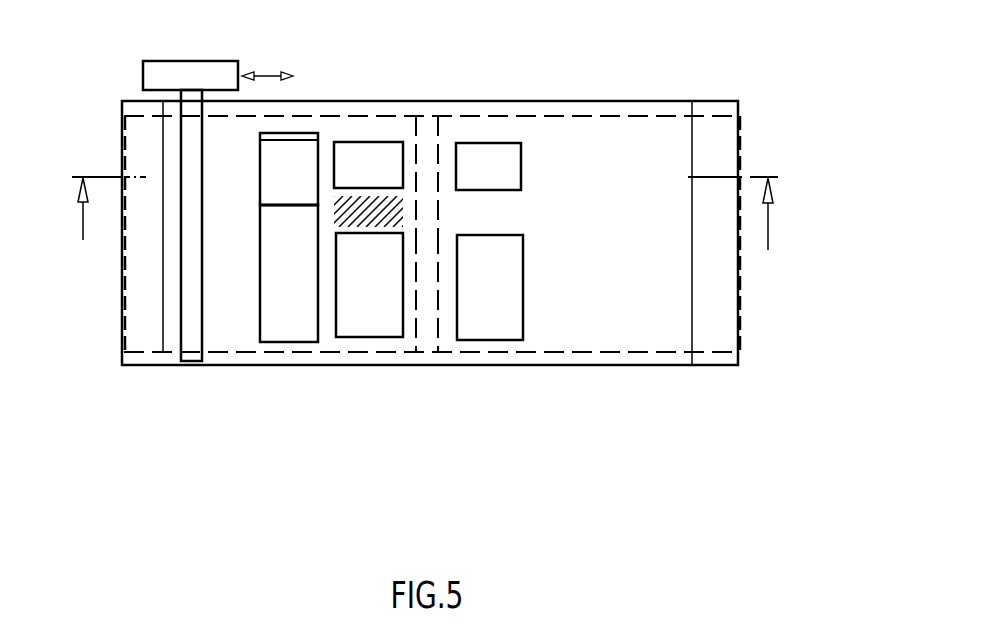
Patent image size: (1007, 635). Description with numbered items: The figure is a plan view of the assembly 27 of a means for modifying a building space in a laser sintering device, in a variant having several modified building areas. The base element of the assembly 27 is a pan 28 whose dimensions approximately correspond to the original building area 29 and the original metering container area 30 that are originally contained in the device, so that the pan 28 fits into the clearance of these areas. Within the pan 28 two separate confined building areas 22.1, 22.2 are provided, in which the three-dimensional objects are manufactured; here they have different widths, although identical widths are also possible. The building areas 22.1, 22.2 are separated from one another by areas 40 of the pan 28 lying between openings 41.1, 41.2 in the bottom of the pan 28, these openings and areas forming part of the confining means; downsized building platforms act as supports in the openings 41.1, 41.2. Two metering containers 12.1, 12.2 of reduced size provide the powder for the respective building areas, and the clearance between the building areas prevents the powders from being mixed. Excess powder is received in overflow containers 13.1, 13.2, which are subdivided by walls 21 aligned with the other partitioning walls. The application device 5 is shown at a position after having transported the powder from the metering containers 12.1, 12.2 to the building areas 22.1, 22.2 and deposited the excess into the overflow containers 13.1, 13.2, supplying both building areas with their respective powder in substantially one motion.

The application device 5 is at (193, 297).
The metering container 12.1 is at (497, 157).
The metering container 12.2 is at (487, 300).
The overflow container 13.1 is at (292, 157).
The overflow container 13.2 is at (287, 323).
The wall 21 is at (290, 207).
The building area 22.1 is at (368, 160).
The building area 22.2 is at (378, 317).
The assembly 27 is at (665, 101).
The pan 28 is at (595, 157).
The original building area 29 is at (227, 353).
The original metering container area 30 is at (646, 353).
The area of the pan 40 is at (387, 215).
The opening 41.1 is at (403, 157).
The opening 41.2 is at (405, 315).